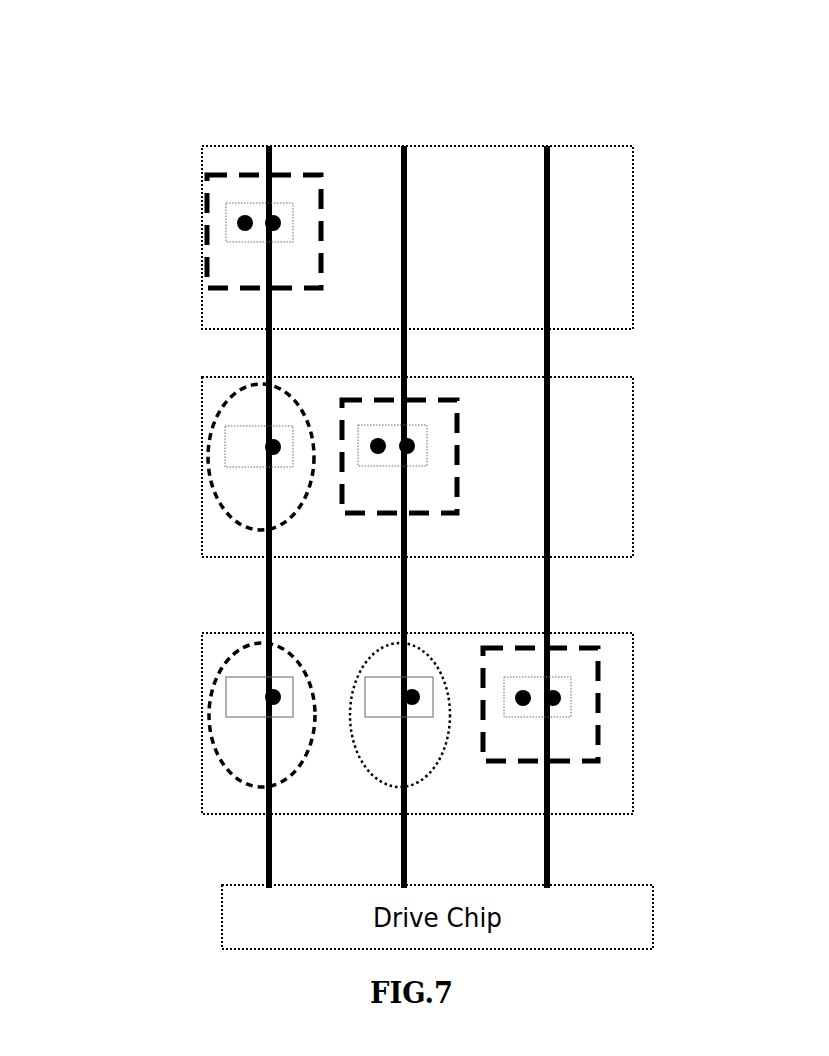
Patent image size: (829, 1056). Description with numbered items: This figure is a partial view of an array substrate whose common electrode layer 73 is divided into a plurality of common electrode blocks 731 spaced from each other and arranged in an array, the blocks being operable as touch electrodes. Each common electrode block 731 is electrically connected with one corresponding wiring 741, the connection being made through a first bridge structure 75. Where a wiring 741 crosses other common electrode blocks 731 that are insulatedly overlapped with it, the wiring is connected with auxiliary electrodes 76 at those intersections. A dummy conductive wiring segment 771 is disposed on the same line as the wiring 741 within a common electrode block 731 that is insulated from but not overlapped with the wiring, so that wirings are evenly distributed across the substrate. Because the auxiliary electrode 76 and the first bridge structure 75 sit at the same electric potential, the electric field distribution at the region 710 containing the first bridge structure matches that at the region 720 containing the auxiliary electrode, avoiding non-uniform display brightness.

The common electrode layer 73 is at (333, 480).
The common electrode block 731 is at (333, 480).
The dummy conductive wiring segment 771 is at (549, 491).
The wiring 741 is at (345, 851).
The region with the first bridge structure 710 is at (421, 456).
The first bridge structure 75 is at (363, 407).
The region with the auxiliary electrode 720 is at (385, 647).
The auxiliary electrode 76 is at (277, 551).